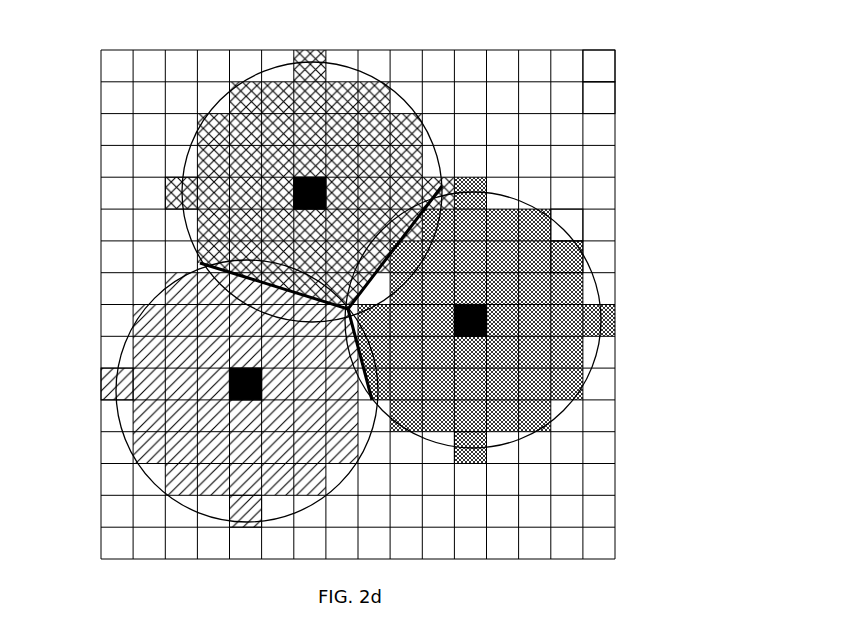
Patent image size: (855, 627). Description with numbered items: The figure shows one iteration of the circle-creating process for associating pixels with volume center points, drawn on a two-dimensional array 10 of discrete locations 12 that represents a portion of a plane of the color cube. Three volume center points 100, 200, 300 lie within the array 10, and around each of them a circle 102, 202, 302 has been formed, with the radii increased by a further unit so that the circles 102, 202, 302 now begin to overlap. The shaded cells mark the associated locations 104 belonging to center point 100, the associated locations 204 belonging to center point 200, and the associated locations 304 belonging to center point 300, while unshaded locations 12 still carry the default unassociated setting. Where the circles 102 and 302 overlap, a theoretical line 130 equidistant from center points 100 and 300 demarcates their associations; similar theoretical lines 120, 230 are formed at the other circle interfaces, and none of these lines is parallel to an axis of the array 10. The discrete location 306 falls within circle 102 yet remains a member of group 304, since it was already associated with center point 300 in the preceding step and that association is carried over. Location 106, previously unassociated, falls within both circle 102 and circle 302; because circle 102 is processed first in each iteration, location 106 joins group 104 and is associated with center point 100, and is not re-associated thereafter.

The two-dimensional array 10 is at (700, 77).
The discrete location 12 is at (598, 63).
The volume center point 100 is at (283, 98).
The circle 102 is at (338, 72).
The associated locations 104 is at (165, 193).
The location 106 is at (590, 291).
The theoretical line 120 is at (157, 297).
The theoretical line 130 is at (533, 205).
The volume center point 200 is at (125, 428).
The circle 202 is at (123, 355).
The associated locations 204 is at (232, 513).
The theoretical line 230 is at (412, 430).
The volume center point 300 is at (617, 318).
The circle 302 is at (570, 237).
The associated locations 304 is at (490, 462).
The discrete location 306 is at (587, 260).